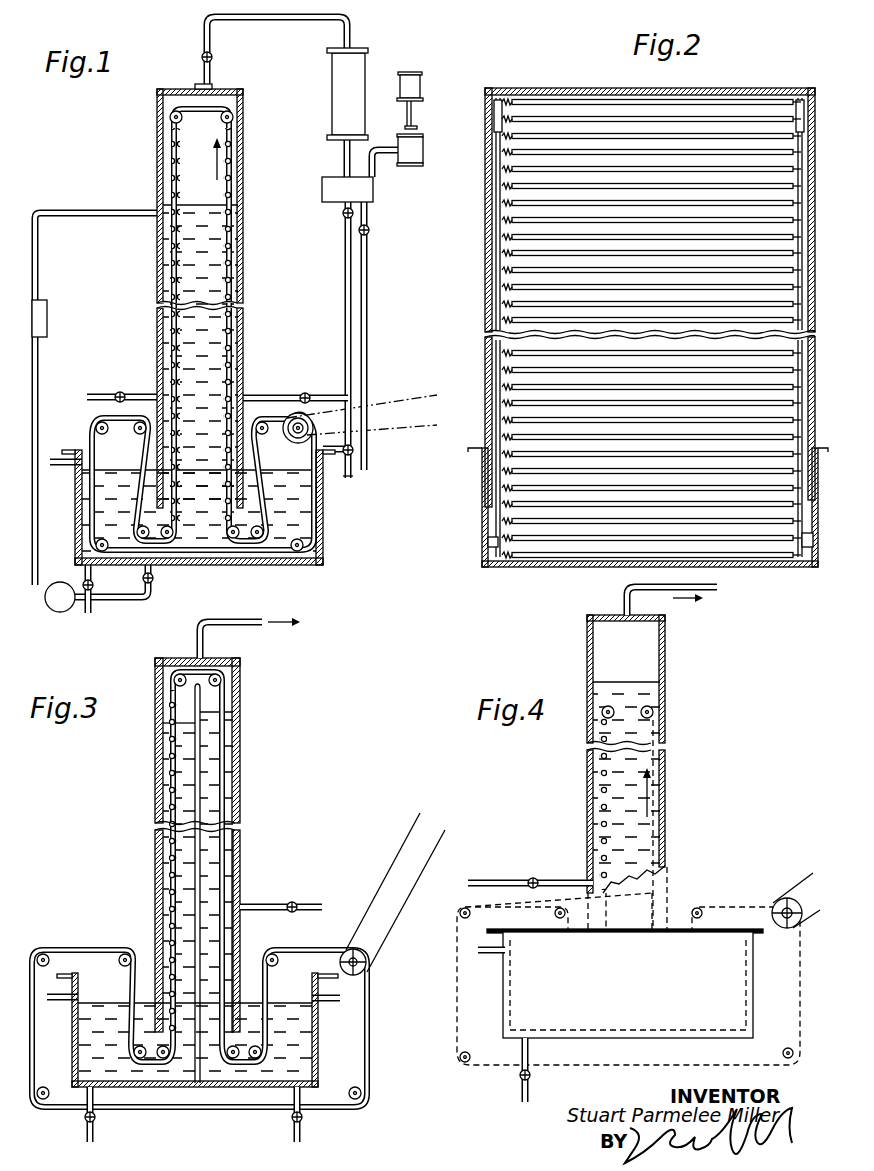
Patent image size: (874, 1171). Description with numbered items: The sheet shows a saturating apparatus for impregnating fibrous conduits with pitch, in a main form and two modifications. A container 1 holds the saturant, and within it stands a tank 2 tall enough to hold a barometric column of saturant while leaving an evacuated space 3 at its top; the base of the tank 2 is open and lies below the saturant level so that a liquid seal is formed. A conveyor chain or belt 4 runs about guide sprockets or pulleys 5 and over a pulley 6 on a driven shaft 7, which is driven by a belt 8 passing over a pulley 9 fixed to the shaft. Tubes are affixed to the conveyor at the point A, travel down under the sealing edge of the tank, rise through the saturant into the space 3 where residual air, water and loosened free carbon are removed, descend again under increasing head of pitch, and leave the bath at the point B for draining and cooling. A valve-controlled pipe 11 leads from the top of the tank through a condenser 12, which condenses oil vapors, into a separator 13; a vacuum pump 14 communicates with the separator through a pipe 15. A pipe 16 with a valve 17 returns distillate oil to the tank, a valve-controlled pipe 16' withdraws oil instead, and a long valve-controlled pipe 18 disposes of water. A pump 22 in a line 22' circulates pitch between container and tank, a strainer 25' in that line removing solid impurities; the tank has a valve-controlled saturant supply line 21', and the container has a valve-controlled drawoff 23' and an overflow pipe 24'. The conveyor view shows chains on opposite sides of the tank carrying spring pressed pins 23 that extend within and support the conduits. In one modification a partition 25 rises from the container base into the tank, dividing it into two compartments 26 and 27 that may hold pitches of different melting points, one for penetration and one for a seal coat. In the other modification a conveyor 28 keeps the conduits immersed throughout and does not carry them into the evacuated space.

In FIG. 1, the container 1 is at (323, 537).
In FIG. 2, the container 1 is at (483, 490).
In FIG. 3, the container 1 is at (313, 1031).
In FIG. 4, the container 1 is at (755, 987).
In FIG. 1, the tank 2 is at (245, 343).
In FIG. 2, the tank 2 is at (487, 417).
In FIG. 3, the tank 2 is at (243, 788).
In FIG. 4, the tank 2 is at (667, 812).
In FIG. 1, the space 3 is at (207, 162).
In FIG. 4, the space 3 is at (627, 681).
In FIG. 1, the conveyor chain or belt 4 is at (230, 249).
In FIG. 2, the conveyor chain or belt 4 is at (497, 525).
In FIG. 1, the guide sprockets or pulleys 5 is at (92, 430).
In FIG. 1, the pulley 6 is at (312, 424).
In FIG. 1, the driven shaft 7 is at (290, 432).
In FIG. 1, the belt 8 is at (362, 404).
In FIG. 1, the pulley 9 is at (327, 455).
In FIG. 1, the valve-controlled pipe 11 is at (272, 20).
In FIG. 1, the condenser 12 is at (300, 103).
In FIG. 1, the separator 13 is at (318, 170).
In FIG. 1, the vacuum pump 14 is at (423, 153).
In FIG. 1, the pipe 15 is at (377, 168).
In FIG. 1, the pipe 16 is at (324, 340).
In FIG. 1, the valve-controlled pipe 16' is at (364, 491).
In FIG. 1, the valve 17 is at (306, 392).
In FIG. 1, the valve-controlled pipe 18 is at (367, 280).
In FIG. 1, the valve-controlled saturant supply line 21' is at (105, 382).
In FIG. 3, the valve-controlled saturant supply line 21' is at (282, 893).
In FIG. 4, the valve-controlled saturant supply line 21' is at (530, 868).
In FIG. 1, the pump 22 is at (96, 604).
In FIG. 1, the line 22' is at (96, 399).
In FIG. 2, the spring pressed pins 23 is at (650, 570).
In FIG. 1, the valve-controlled drawoff 23' is at (110, 602).
In FIG. 3, the valve-controlled drawoff 23' is at (216, 1115).
In FIG. 4, the valve-controlled drawoff 23' is at (547, 1070).
In FIG. 1, the overflow pipe 24' is at (65, 481).
In FIG. 3, the overflow pipe 24' is at (223, 1017).
In FIG. 4, the overflow pipe 24' is at (486, 973).
In FIG. 3, the partition 25 is at (239, 883).
In FIG. 1, the strainer 25' is at (60, 317).
In FIG. 3, the compartment 26 is at (233, 873).
In FIG. 3, the compartment 27 is at (163, 892).
In FIG. 4, the conveyor 28 is at (738, 908).
In FIG. 1, the affixing point A is at (287, 417).
In FIG. 1, the removal point B is at (125, 420).